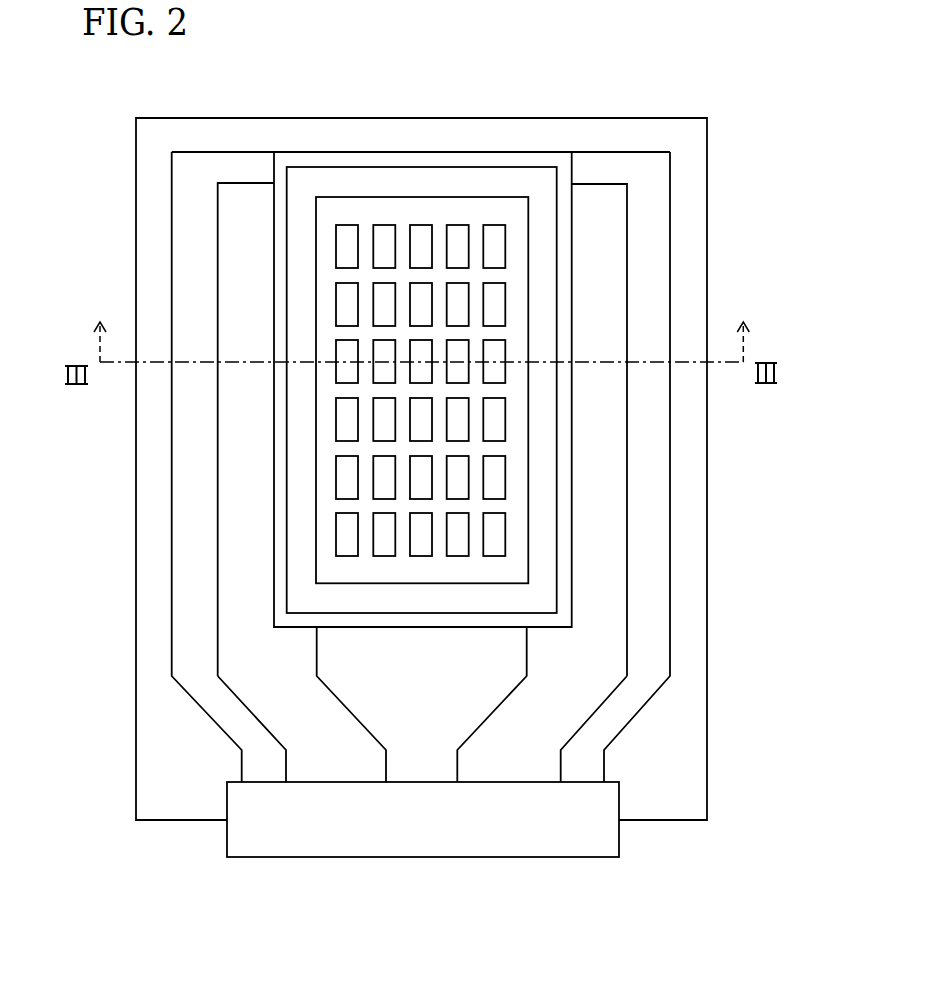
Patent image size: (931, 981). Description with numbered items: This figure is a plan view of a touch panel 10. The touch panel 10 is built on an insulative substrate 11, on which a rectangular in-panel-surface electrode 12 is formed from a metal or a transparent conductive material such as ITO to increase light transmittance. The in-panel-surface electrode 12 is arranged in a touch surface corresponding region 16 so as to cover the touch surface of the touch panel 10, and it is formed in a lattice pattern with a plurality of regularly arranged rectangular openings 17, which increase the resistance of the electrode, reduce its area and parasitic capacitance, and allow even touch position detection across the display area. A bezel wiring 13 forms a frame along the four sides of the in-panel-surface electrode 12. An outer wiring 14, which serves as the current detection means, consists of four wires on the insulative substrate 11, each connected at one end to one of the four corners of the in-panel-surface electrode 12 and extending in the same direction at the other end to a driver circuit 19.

The touch panel 10 is at (418, 107).
The insulative substrate 11 is at (690, 783).
The in-panel-surface electrode 12 is at (563, 262).
The bezel wiring 13 is at (538, 187).
The outer wiring 14 is at (307, 697).
The touch surface corresponding region 16 is at (418, 553).
The openings 17 is at (357, 246).
The driver circuit 19 is at (608, 837).